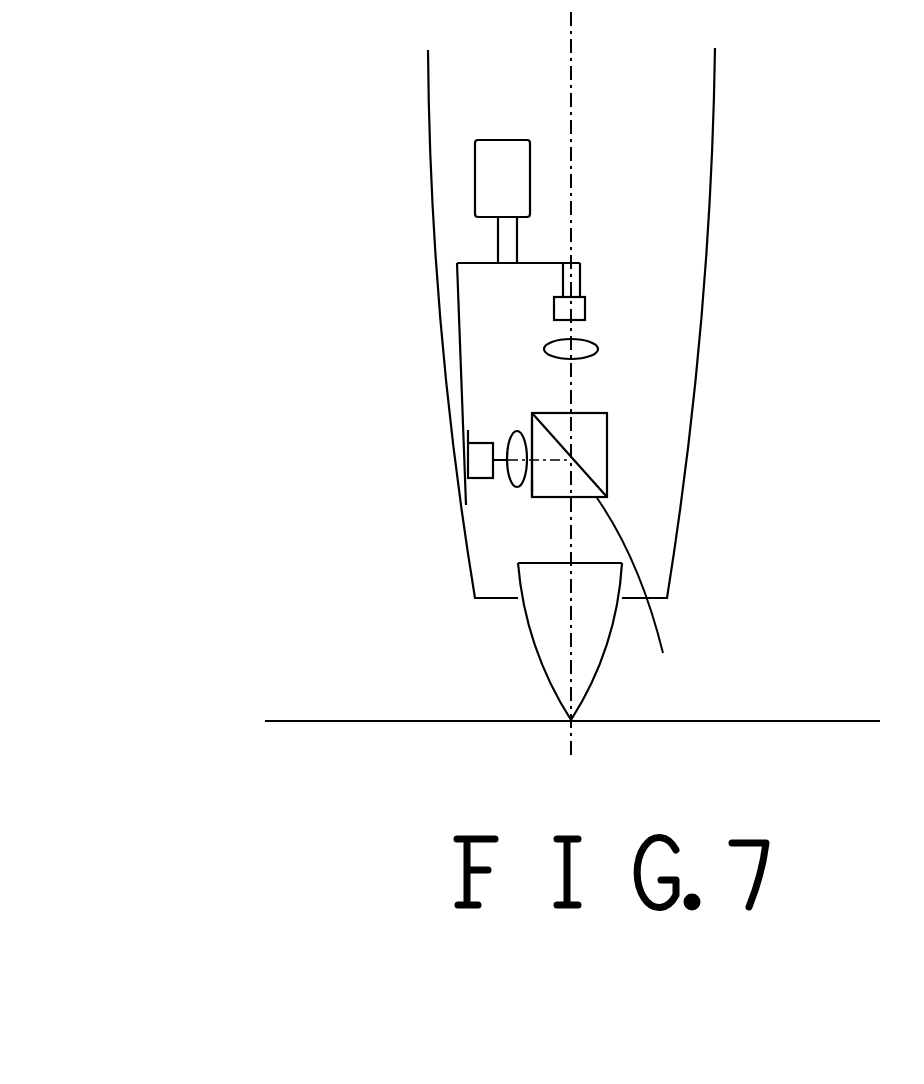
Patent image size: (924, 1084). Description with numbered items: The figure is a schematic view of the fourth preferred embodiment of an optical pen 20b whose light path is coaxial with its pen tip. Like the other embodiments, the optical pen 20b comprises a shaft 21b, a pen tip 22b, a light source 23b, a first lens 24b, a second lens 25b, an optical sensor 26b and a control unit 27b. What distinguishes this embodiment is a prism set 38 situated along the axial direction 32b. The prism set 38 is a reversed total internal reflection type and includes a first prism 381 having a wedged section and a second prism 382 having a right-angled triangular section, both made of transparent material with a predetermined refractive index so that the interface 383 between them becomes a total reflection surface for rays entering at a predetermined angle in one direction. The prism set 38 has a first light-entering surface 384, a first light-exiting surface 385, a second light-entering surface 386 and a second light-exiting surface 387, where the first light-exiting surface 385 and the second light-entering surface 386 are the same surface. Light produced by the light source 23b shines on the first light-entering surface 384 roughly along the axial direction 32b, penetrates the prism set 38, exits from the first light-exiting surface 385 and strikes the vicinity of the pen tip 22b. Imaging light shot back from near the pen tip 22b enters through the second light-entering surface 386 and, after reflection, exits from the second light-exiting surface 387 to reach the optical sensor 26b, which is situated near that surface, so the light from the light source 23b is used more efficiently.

The optical pen 20b is at (236, 255).
The shaft 21b is at (432, 228).
The pen tip 22b is at (537, 653).
The light source 23b is at (585, 311).
The first lens 24b is at (598, 349).
The second lens 25b is at (510, 487).
The optical sensor 26b is at (476, 454).
The control unit 27b is at (490, 152).
The axial direction 32b is at (571, 66).
The prism set 38 is at (566, 500).
The first prism 381 is at (600, 468).
The second prism 382 is at (604, 495).
The interface 383 is at (532, 432).
The first light-entering surface 384 is at (588, 414).
The first light-exiting surface 385 is at (553, 498).
The second light-entering surface 386 is at (649, 603).
The second light-exiting surface 387 is at (528, 487).